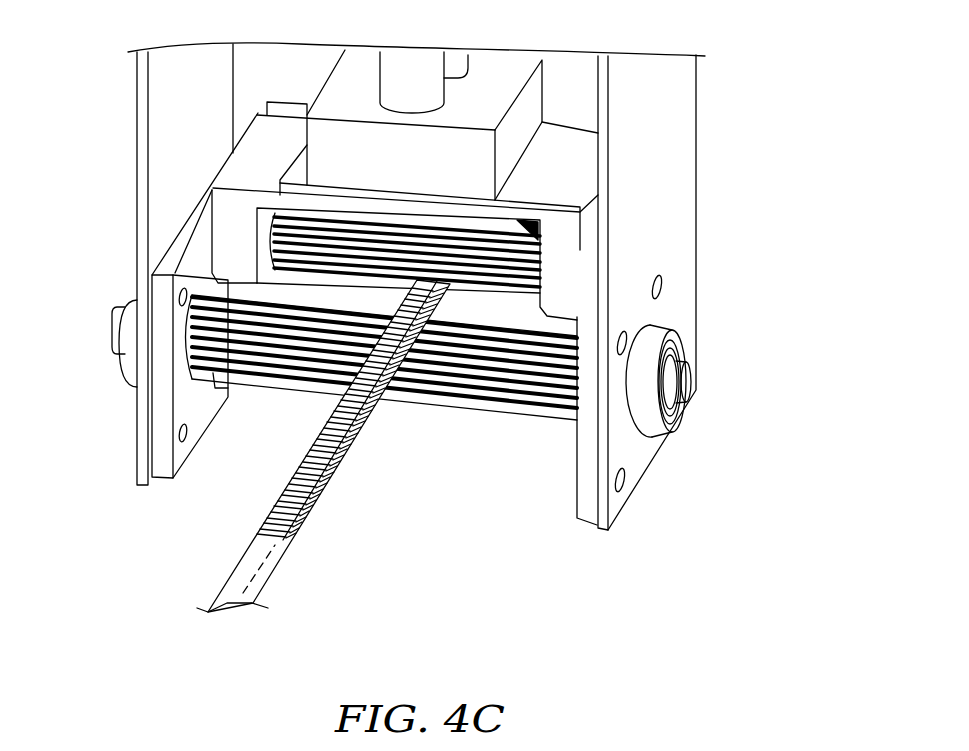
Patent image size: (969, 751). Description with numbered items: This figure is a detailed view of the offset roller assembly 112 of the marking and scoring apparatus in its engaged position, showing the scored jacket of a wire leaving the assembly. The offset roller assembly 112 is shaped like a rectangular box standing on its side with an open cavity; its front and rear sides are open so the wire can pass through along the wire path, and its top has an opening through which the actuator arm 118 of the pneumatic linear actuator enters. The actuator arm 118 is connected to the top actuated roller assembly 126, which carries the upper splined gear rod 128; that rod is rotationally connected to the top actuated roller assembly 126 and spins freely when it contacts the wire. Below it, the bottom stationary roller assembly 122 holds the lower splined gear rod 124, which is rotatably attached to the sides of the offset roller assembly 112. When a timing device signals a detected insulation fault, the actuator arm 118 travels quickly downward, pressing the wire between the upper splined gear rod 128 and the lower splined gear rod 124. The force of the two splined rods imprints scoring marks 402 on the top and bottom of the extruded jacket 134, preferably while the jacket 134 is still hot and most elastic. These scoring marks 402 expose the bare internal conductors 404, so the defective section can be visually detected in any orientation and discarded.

The offset roller assembly 112 is at (728, 102).
The actuator arm 118 is at (465, 163).
The bottom stationary roller assembly 122 is at (165, 367).
The lower splined gear rod 124 is at (213, 302).
The top actuated roller assembly 126 is at (563, 279).
The upper splined gear rod 128 is at (545, 249).
The jacket 134 is at (232, 572).
The scoring marks 402 is at (321, 464).
The exposed bare internal conductors 404 is at (366, 406).